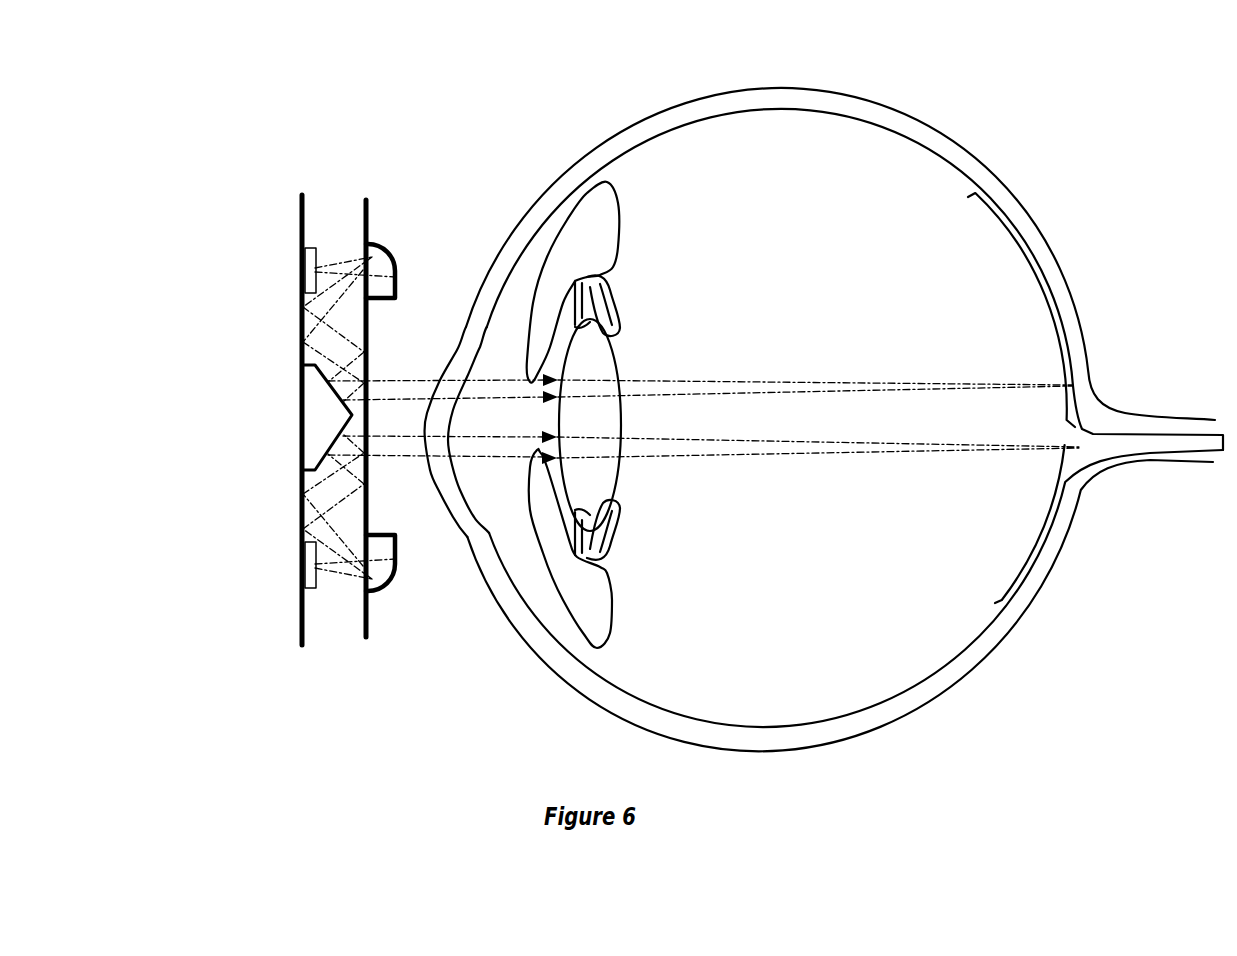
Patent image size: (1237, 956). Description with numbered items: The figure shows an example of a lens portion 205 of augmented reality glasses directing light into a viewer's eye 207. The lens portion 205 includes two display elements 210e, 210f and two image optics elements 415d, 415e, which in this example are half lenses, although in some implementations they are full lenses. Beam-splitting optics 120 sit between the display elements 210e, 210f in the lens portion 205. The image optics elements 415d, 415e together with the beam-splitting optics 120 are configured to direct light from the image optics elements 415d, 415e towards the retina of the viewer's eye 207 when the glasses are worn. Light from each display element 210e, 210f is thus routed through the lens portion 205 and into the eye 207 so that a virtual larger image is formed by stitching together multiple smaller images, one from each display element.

The lens portion 205 is at (342, 217).
The display element 210e is at (302, 270).
The display element 210f is at (302, 562).
The image optics element 415d is at (396, 268).
The image optics element 415e is at (396, 557).
The beam-splitting optics 120 is at (318, 422).
The viewer's eye 207 is at (831, 96).